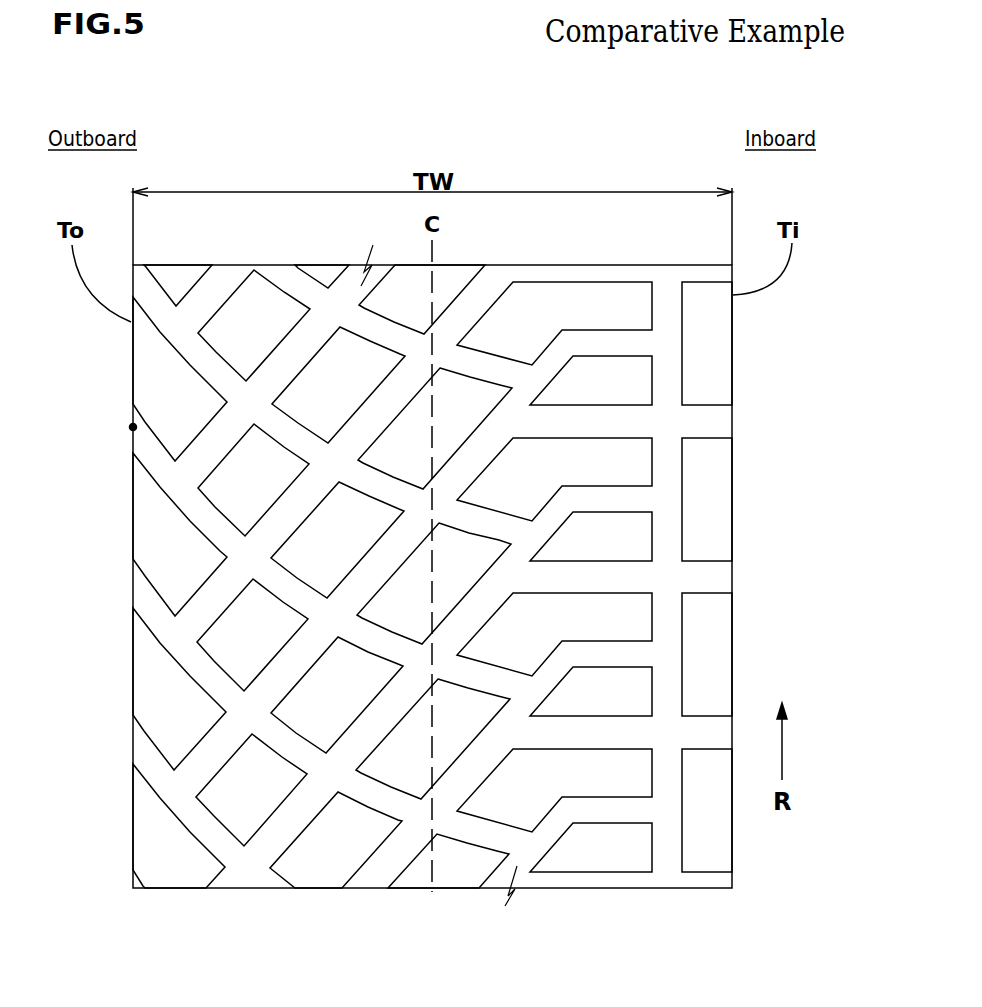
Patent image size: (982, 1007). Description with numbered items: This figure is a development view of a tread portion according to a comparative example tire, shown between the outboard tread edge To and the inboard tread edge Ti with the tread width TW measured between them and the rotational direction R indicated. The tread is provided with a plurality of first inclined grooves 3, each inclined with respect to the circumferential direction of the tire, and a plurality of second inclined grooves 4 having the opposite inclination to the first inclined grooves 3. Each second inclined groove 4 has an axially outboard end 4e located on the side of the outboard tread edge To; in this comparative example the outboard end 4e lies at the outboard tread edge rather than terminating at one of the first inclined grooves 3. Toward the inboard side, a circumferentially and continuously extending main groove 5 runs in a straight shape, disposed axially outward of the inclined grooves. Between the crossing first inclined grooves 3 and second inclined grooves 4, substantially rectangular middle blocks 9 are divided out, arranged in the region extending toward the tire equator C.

The first inclined groove 3 is at (218, 755).
The second inclined groove 4 is at (170, 478).
The axially outboard end 4e is at (131, 425).
The main groove 5 is at (667, 842).
The middle block 9 is at (163, 545).